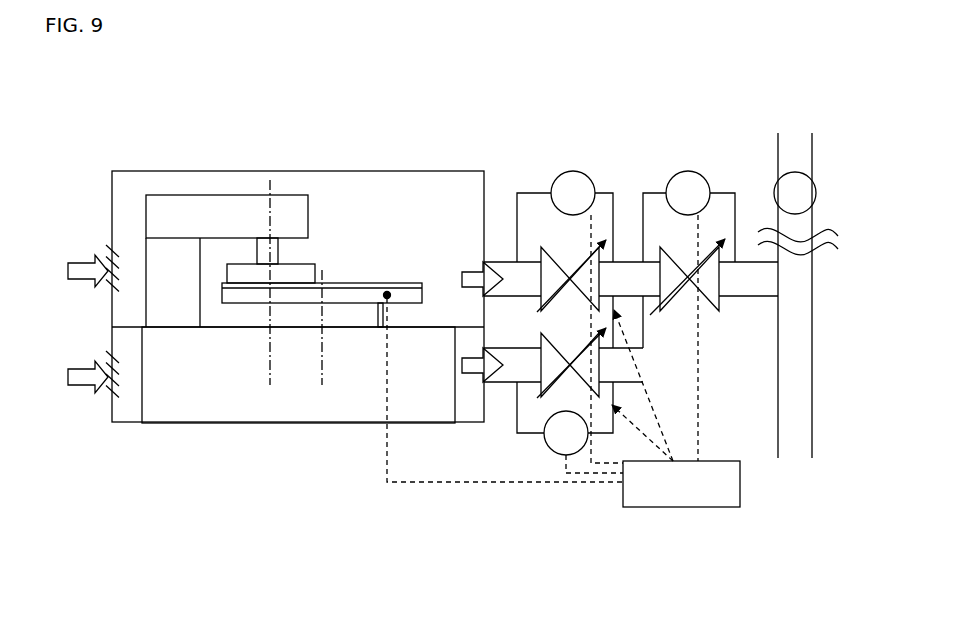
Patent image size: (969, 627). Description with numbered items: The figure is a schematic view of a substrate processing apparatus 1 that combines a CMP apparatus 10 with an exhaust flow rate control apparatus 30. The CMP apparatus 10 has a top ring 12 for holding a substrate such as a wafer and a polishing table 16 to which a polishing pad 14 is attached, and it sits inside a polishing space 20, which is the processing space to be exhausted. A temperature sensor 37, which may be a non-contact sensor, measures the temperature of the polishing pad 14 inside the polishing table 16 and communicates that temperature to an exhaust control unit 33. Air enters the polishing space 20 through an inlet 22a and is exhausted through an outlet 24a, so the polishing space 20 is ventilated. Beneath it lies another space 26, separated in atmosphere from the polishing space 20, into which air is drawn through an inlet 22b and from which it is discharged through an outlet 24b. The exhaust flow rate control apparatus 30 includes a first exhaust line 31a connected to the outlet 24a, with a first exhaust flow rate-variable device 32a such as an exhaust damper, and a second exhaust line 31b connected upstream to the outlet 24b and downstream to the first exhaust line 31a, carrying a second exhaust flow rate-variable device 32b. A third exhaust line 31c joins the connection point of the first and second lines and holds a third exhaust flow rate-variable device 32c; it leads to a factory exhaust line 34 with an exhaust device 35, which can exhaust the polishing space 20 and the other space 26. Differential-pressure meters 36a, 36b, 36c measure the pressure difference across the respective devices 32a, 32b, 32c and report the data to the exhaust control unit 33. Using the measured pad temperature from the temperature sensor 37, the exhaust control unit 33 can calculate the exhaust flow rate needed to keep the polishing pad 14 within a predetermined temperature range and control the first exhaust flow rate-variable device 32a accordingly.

The substrate processing apparatus 1 is at (487, 130).
The CMP apparatus 10 is at (338, 181).
The top ring 12 is at (302, 272).
The polishing pad 14 is at (389, 282).
The polishing table 16 is at (411, 300).
The polishing space 20 is at (417, 171).
The inlet 22a is at (103, 245).
The inlet 22b is at (103, 355).
The outlet 24a is at (475, 261).
The outlet 24b is at (474, 338).
The other space 26 is at (468, 420).
The exhaust flow rate control apparatus 30 is at (828, 284).
The first exhaust line 31a is at (503, 262).
The second exhaust line 31b is at (518, 362).
The third exhaust line 31c is at (745, 297).
The first exhaust flow rate-variable device 32a is at (548, 262).
The second exhaust flow rate-variable device 32b is at (562, 348).
The third exhaust flow rate-variable device 32c is at (713, 306).
The exhaust control unit 33 is at (677, 508).
The factory exhaust line 34 is at (806, 338).
The exhaust device 35 is at (812, 182).
The differential-pressure meter 36a is at (565, 172).
The differential-pressure meter 36b is at (546, 446).
The differential-pressure meter 36c is at (689, 171).
The temperature sensor 37 is at (385, 298).